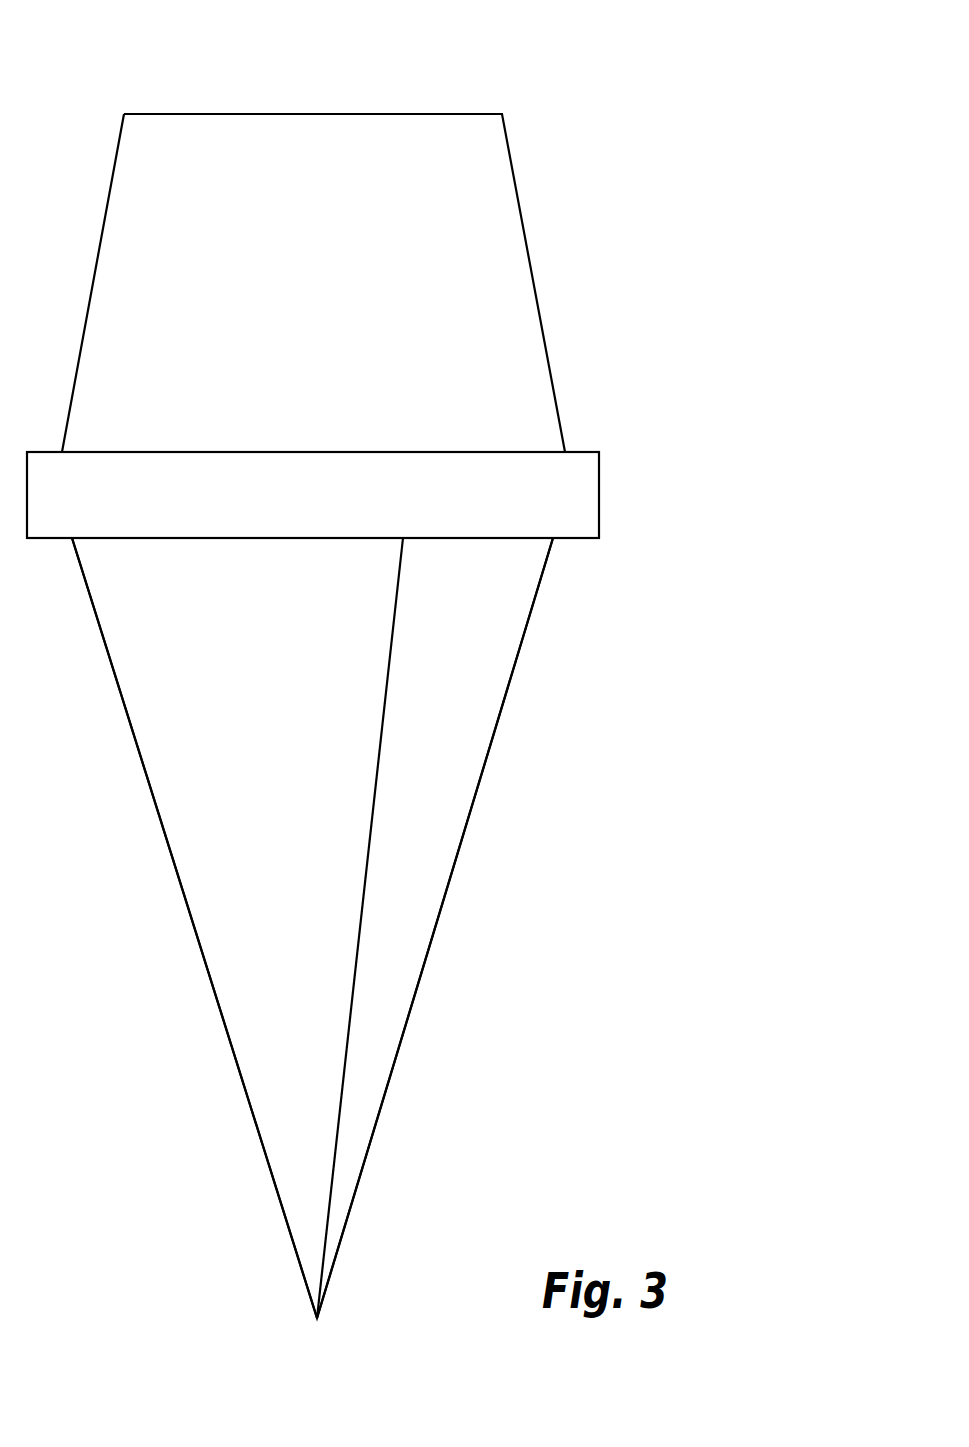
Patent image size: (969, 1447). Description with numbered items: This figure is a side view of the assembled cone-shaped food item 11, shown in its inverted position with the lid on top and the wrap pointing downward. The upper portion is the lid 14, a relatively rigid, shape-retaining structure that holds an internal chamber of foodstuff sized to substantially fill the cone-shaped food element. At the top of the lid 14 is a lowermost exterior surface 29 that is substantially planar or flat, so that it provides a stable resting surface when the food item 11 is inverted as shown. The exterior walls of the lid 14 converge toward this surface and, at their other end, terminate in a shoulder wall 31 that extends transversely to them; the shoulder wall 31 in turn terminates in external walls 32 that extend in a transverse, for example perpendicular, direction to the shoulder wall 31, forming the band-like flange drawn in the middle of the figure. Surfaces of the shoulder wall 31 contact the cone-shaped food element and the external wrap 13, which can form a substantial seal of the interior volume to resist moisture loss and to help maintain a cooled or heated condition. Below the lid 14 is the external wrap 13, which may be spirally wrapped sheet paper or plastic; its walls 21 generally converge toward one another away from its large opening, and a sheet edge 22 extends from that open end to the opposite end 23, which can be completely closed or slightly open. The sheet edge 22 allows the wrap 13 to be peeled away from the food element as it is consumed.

The food item 11 is at (574, 68).
The external wrap 13 is at (458, 848).
The lid 14 is at (530, 255).
The walls 21 is at (212, 868).
The sheet edge 22 is at (385, 703).
The opposite end 23 is at (317, 1318).
The lowermost exterior surface 29 is at (318, 114).
The shoulder wall 31 is at (578, 451).
The external walls 32 is at (599, 504).